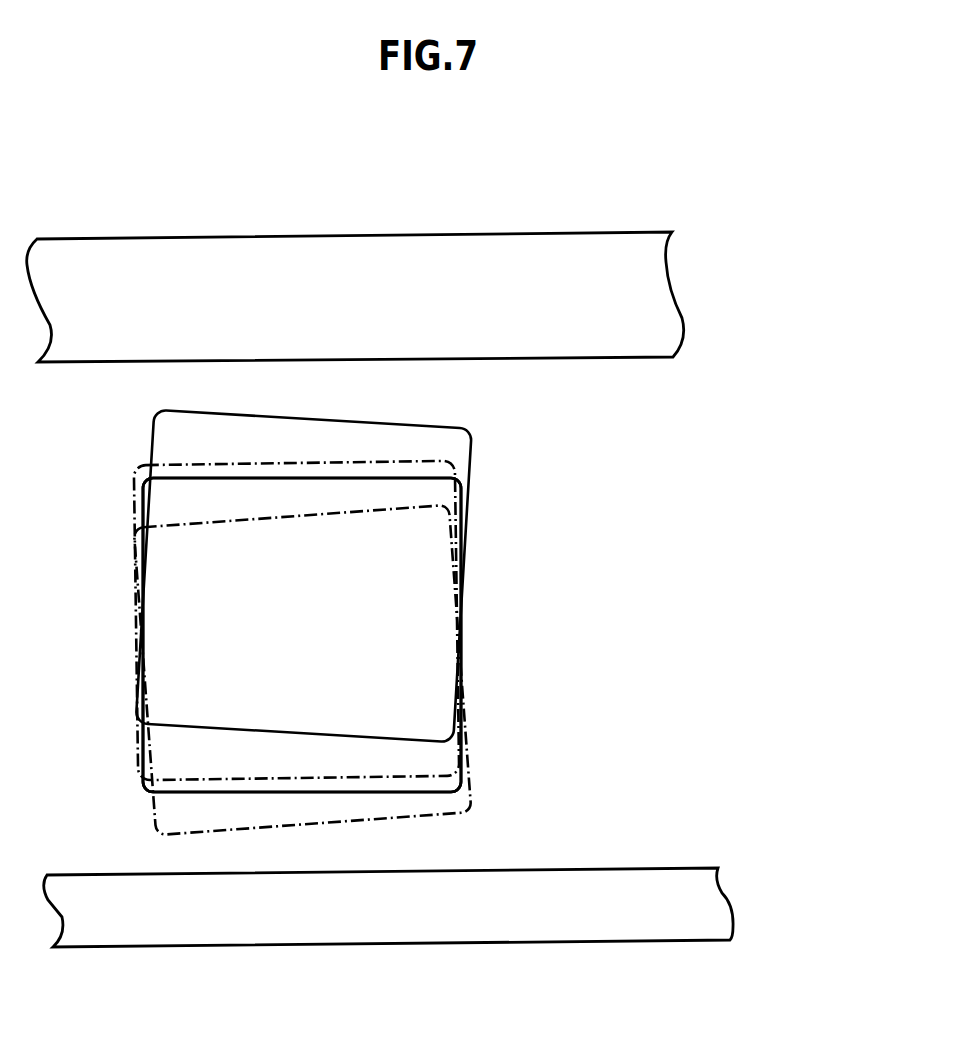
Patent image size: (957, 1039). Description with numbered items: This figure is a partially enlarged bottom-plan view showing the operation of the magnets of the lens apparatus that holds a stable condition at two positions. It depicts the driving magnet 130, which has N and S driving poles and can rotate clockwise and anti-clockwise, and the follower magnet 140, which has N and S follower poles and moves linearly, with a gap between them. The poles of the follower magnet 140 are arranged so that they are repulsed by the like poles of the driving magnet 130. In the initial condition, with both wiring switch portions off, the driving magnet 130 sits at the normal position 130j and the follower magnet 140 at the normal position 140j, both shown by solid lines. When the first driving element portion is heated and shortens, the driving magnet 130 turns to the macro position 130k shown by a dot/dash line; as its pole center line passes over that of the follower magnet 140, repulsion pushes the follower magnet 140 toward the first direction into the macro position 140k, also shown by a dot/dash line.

The driving magnet 130 is at (459, 450).
The normal position 130j is at (387, 425).
The macro position 130k is at (248, 835).
The follower magnet 140 is at (388, 603).
The normal position 140j is at (297, 478).
The macro position 140k is at (177, 462).